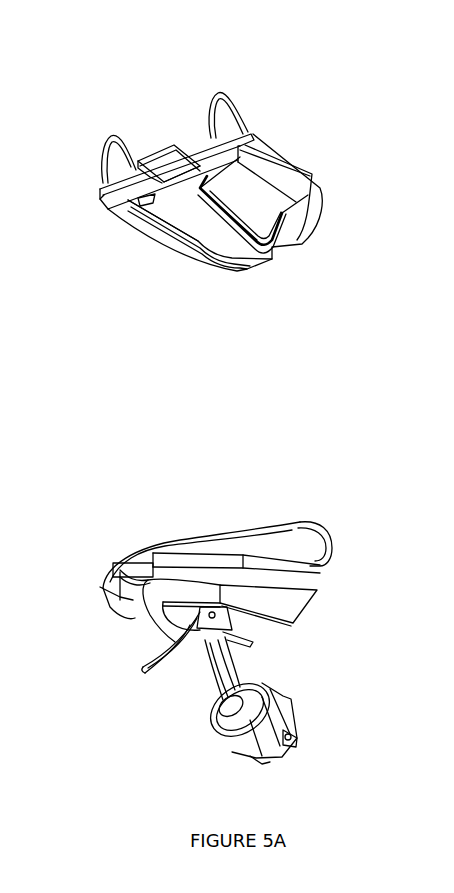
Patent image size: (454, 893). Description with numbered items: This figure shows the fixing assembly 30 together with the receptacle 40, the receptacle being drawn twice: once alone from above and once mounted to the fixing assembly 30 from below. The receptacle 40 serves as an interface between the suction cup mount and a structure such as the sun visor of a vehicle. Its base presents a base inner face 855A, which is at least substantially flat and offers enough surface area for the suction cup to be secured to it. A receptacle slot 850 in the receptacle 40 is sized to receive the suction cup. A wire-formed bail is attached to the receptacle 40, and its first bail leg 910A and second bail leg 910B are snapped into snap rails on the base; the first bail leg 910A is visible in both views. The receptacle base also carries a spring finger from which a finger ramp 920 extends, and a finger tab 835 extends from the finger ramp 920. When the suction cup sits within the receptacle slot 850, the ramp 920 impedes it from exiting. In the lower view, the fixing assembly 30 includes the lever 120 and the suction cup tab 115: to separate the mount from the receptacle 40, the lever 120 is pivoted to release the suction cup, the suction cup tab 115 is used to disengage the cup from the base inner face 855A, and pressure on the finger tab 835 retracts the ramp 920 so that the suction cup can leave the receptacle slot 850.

The fixing assembly 30 is at (149, 737).
The receptacle 40 is at (335, 51).
The suction cup tab 115 is at (102, 574).
The lever 120 is at (141, 670).
The finger tab 835 is at (165, 147).
The receptacle slot 850 is at (145, 200).
The base inner face 855A is at (221, 222).
The first bail leg 910A is at (103, 138).
The second bail leg 910B is at (223, 93).
The finger ramp 920 is at (182, 180).